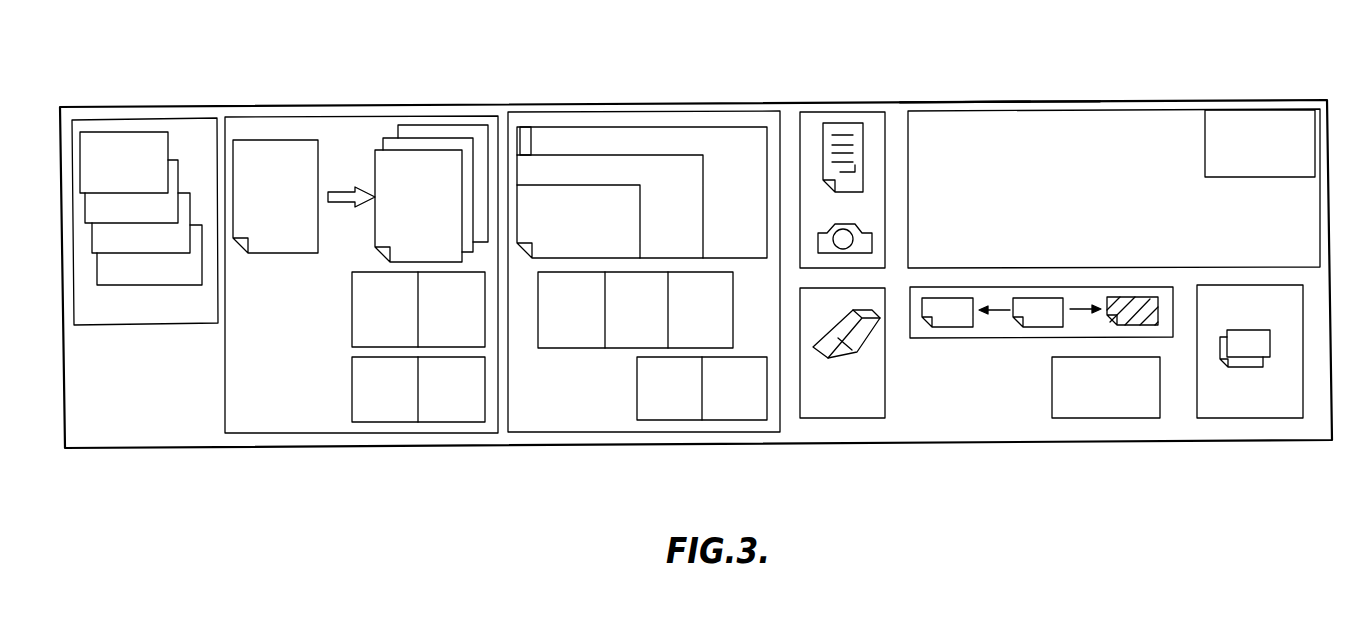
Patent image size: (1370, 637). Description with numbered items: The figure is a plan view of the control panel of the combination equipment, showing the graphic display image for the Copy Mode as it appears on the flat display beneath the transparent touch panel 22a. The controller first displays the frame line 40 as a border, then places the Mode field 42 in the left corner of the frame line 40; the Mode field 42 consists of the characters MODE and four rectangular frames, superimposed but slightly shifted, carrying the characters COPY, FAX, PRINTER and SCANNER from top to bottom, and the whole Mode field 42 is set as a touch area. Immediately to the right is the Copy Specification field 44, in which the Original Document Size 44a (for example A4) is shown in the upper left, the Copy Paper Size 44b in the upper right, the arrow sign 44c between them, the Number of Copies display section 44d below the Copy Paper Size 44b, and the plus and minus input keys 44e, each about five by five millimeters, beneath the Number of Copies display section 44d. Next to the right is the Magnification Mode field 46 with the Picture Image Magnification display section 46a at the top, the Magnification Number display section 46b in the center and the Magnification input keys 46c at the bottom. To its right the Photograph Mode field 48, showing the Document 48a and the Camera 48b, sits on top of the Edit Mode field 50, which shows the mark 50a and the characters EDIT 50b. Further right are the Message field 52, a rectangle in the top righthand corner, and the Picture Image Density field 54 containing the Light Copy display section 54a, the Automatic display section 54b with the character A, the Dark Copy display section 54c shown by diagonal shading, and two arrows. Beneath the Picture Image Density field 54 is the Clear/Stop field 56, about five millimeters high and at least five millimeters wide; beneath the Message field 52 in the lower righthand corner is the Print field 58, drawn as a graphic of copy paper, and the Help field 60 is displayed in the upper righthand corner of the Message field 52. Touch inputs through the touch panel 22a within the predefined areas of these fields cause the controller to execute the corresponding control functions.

The frame line (border) 40 is at (580, 445).
The transparent touch panel 22a is at (993, 92).
The Mode field 42 is at (176, 127).
The Copy Specification field 44 is at (367, 117).
The Original Document Size 44a is at (263, 140).
The Copy Paper Size 44b is at (432, 150).
The arrow sign 44c is at (333, 190).
The Number of Copies display section 44d is at (352, 305).
The input keys for the number of copies 44e is at (406, 422).
The Magnification Mode field 46 is at (596, 113).
The Picture Image Magnification display section 46a is at (527, 157).
The Magnification Number display section 46b is at (573, 348).
The Magnification input keys 46c is at (680, 420).
The Photograph Mode field 48 is at (880, 112).
The Document 48a is at (825, 123).
The Camera 48b is at (872, 236).
The Edit Mode field 50 is at (890, 402).
The mark 50a is at (852, 353).
The characters for edit (EDIT) 50b is at (805, 420).
The Message field 52 is at (1113, 110).
The Picture Image Density field 54 is at (992, 290).
The Light Copy display section 54a is at (958, 327).
The Automatic display section 54b is at (1038, 327).
The Dark Copy display section 54c is at (1132, 297).
The Clear/Stop (C/S) field 56 is at (1135, 418).
The Print field 58 is at (1297, 352).
The Help (HELP) field 60 is at (1290, 110).